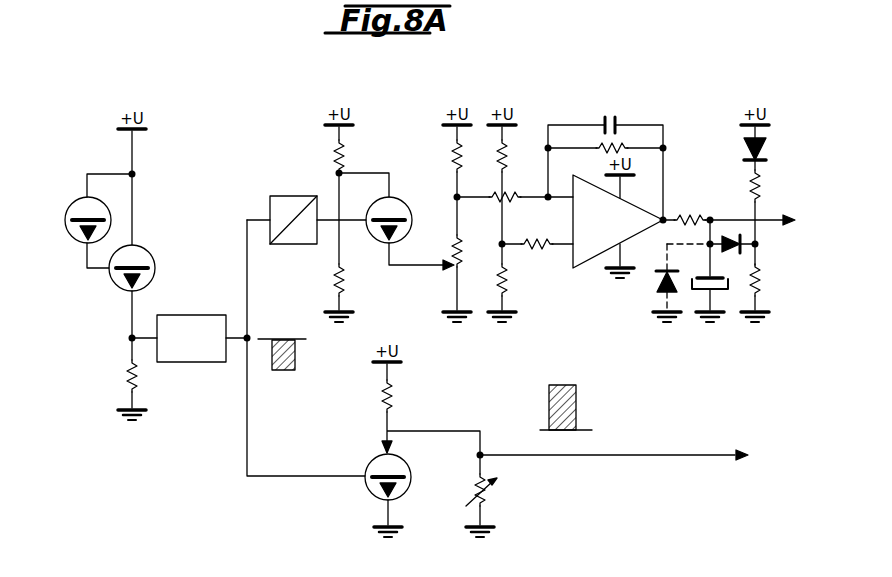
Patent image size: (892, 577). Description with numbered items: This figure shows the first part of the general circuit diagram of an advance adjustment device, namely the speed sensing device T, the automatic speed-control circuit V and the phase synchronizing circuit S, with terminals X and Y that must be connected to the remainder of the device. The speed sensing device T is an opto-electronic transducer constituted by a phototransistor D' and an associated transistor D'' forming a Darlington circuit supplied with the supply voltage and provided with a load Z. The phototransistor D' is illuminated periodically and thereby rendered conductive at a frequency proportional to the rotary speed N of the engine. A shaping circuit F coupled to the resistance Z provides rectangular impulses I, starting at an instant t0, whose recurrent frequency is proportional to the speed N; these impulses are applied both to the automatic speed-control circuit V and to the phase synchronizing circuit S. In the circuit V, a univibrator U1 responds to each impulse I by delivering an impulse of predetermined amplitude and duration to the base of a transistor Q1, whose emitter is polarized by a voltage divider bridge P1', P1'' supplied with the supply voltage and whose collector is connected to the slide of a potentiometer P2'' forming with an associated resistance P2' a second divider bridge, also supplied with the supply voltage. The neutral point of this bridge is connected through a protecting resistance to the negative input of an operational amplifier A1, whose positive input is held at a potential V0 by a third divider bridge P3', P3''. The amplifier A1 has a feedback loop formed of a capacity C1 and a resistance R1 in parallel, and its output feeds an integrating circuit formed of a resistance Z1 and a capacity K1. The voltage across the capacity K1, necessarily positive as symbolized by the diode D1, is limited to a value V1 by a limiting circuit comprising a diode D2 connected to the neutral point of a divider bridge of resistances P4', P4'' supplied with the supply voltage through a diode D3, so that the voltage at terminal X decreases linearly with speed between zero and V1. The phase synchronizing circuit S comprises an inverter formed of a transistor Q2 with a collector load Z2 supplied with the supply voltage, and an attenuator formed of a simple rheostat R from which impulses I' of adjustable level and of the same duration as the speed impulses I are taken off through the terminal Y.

The rotary speed N is at (80, 195).
The phototransistor D' is at (84, 231).
The transistor D'' is at (122, 275).
The load Z is at (120, 384).
The shaping circuit F is at (189, 338).
The speed sensing device T is at (94, 326).
The automatic speed-control circuit V is at (294, 148).
The univibrator U1 is at (272, 198).
The voltage divider bridge resistance P1' is at (352, 154).
The voltage divider bridge resistance P1'' is at (353, 287).
The transistor Q1 is at (397, 218).
The resistance P2' is at (446, 157).
The potentiometer P2'' is at (443, 272).
The divider bridge resistance P3' is at (515, 156).
The divider bridge resistance P3'' is at (518, 287).
The potential V0 is at (480, 244).
The operational amplifier A1 is at (618, 221).
The capacity C1 is at (593, 115).
The resistance R1 is at (600, 141).
The resistance Z1 is at (684, 208).
The terminal X is at (797, 220).
The diode D1 is at (654, 290).
The capacity K1 is at (705, 294).
The diode D2 is at (732, 256).
The limit voltage V1 is at (758, 245).
The diode D3 is at (737, 149).
The resistance P4' is at (769, 184).
The resistance P4'' is at (770, 287).
The time instant t0 is at (282, 345).
The rectangular impulses I is at (285, 386).
The impulses I' is at (553, 407).
The collector load Z2 is at (399, 396).
The transistor Q2 is at (397, 489).
The terminal Y is at (753, 455).
The rheostat R is at (491, 490).
The phase synchronizing circuit S is at (326, 507).